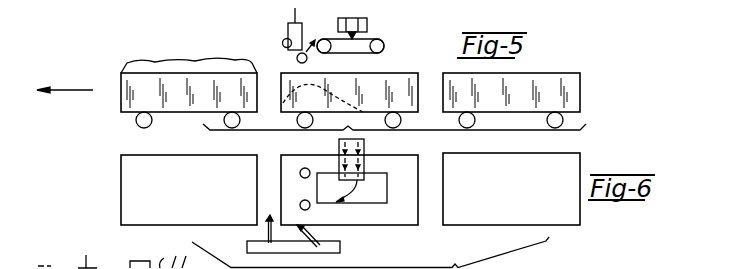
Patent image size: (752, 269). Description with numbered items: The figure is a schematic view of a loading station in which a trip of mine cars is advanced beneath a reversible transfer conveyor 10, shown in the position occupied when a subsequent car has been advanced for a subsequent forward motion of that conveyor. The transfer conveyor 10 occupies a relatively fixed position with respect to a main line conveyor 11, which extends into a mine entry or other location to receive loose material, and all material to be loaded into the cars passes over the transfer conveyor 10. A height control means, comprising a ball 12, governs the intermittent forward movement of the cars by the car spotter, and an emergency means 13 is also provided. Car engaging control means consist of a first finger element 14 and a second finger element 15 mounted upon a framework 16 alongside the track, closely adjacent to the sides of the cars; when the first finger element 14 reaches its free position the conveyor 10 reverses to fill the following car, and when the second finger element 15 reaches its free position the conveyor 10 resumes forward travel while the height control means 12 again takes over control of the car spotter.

In FIG. 5, the reversible transfer conveyor 10 is at (397, 41).
In FIG. 6, the reversible transfer conveyor 10 is at (387, 190).
In FIG. 5, the main line conveyor 11 is at (366, 21).
In FIG. 6, the main line conveyor 11 is at (364, 150).
In FIG. 5, the ball of height control means 12 is at (297, 58).
In FIG. 6, the ball of height control means 12 is at (309, 208).
In FIG. 5, the emergency means 13 is at (282, 43).
In FIG. 6, the emergency means 13 is at (304, 168).
In FIG. 6, the first finger element 14 is at (312, 253).
In FIG. 6, the second finger element 15 is at (267, 253).
In FIG. 6, the framework 16 is at (300, 253).